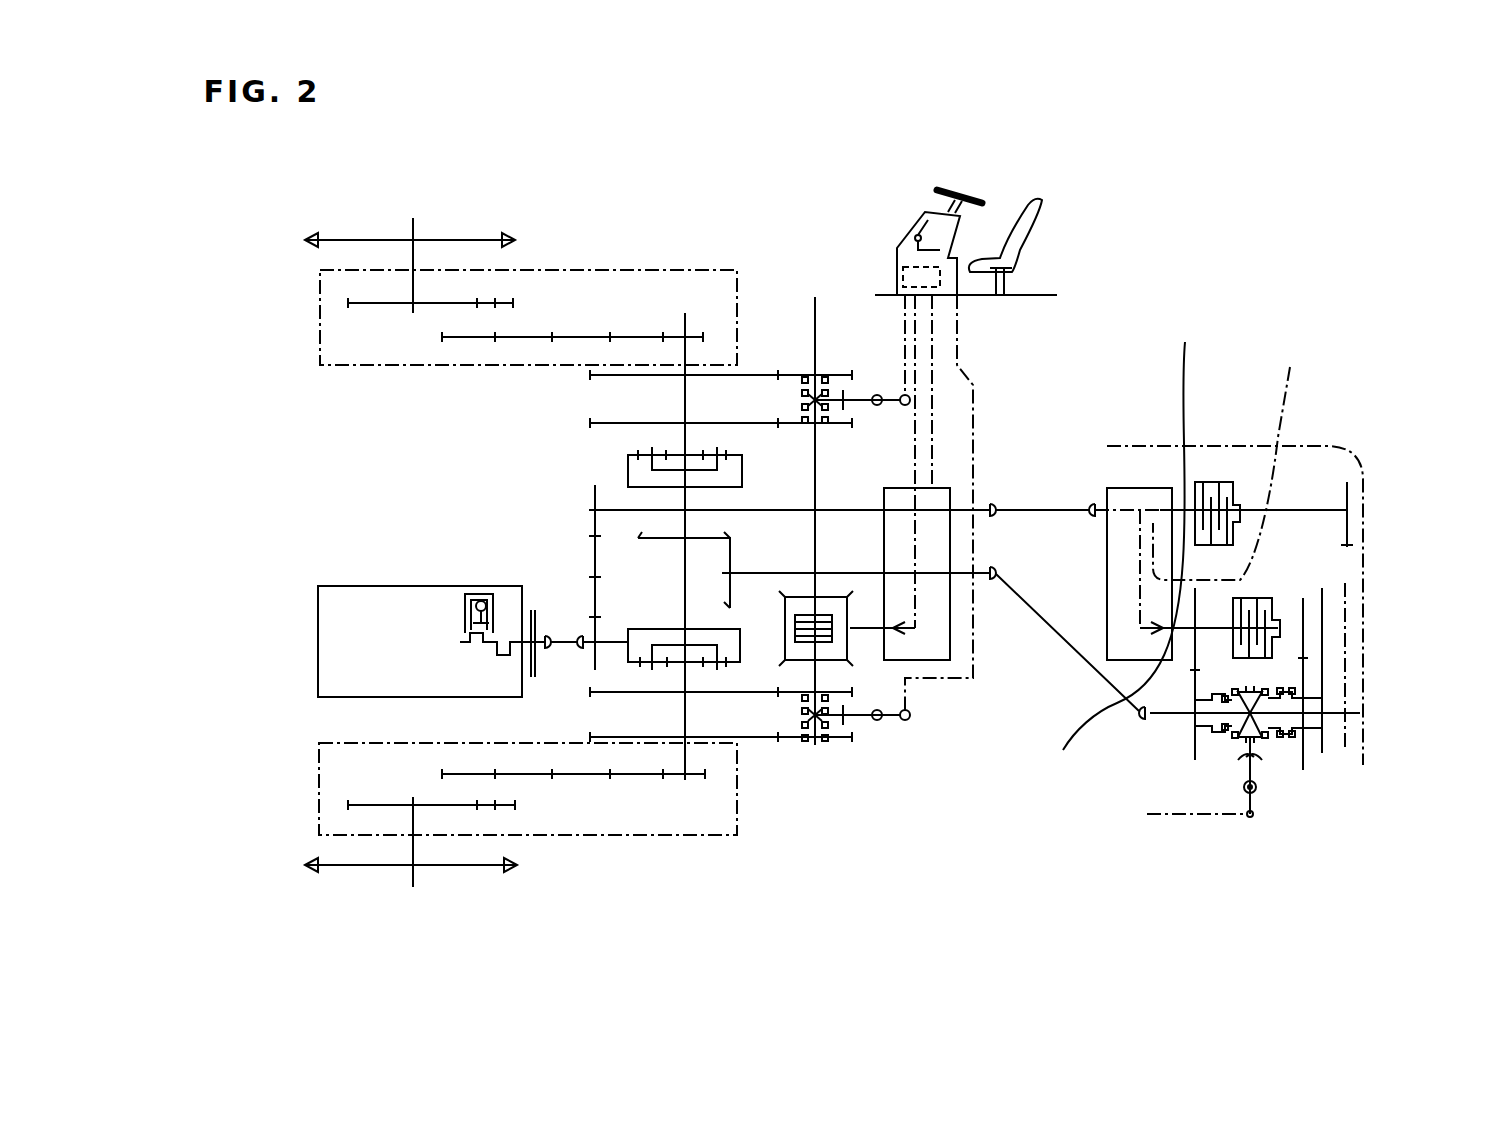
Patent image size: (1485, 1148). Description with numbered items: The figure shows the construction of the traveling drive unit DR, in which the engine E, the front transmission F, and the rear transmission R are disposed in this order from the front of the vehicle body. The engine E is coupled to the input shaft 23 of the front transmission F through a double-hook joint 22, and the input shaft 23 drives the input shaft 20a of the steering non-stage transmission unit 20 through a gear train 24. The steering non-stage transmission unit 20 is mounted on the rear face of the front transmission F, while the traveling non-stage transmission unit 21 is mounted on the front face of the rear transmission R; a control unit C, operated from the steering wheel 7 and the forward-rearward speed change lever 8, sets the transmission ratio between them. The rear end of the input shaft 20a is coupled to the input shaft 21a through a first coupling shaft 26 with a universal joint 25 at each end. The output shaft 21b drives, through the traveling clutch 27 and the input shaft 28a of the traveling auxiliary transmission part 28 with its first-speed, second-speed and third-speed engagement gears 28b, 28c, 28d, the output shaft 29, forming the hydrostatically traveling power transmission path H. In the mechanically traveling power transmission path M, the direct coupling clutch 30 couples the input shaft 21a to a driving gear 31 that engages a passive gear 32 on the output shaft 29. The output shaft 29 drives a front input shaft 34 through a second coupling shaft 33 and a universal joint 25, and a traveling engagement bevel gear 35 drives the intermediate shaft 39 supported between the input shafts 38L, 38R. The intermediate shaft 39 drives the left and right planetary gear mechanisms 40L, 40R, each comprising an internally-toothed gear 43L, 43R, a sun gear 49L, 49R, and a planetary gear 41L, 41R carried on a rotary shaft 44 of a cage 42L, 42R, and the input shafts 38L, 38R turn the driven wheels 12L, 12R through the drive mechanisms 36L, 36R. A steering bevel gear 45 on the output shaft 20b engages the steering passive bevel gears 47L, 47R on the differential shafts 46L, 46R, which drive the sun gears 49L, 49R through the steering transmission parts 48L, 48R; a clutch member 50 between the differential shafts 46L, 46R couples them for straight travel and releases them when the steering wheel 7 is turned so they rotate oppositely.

The steering wheel 7 is at (975, 188).
The forward-rearward speed change lever 8 is at (923, 216).
The right driven wheel 12R is at (452, 238).
The left driven wheel 12L is at (353, 867).
The steering non-stage transmission unit 20 is at (938, 488).
The input shaft of the steering non-stage transmission unit 20a is at (870, 508).
The output shaft of the steering non-stage transmission unit 20b is at (870, 632).
The traveling non-stage transmission unit 21 is at (1135, 529).
The input shaft of the traveling non-stage transmission unit 21a is at (1098, 505).
The output shaft of the traveling non-stage transmission unit 21b is at (1068, 744).
The double-hook joint 22 is at (567, 640).
The input shaft of the front transmission 23 is at (622, 508).
The gear train 24 is at (588, 545).
The universal joint 25 is at (1092, 514).
The first coupling shaft 26 is at (1045, 508).
The traveling clutch 27 is at (1258, 598).
The traveling auxiliary transmission part 28 is at (1281, 795).
The input shaft of the traveling auxiliary transmission part 28a is at (1290, 628).
The first-speed engagement gear 28b is at (1344, 708).
The second-speed engagement gear 28c is at (1195, 668).
The third-speed engagement gear 28d is at (1353, 712).
The output shaft of the traveling auxiliary transmission part 29 is at (1215, 697).
The direct coupling clutch 30 is at (1233, 482).
The driving gear 31 is at (1353, 500).
The passive gear 32 is at (1345, 723).
The second coupling shaft 33 is at (1068, 643).
The front input shaft 34 is at (990, 577).
The traveling engagement bevel gear 35 is at (738, 542).
The right drive mechanism 36R is at (565, 214).
The left drive mechanism 36L is at (566, 855).
The input shaft of the right traveling part 38R is at (685, 313).
The input shaft of the left traveling part 38L is at (686, 780).
The intermediate shaft 39 is at (685, 580).
The right planetary gear mechanism 40R is at (749, 499).
The left planetary gear mechanism 40L is at (752, 657).
The right planetary gear 41R is at (727, 455).
The left planetary gear 41L is at (723, 663).
The right cage 42R is at (713, 455).
The left cage 42L is at (740, 663).
The right internally-toothed gear 43R is at (742, 458).
The left internally-toothed gear 43L is at (628, 662).
The rotary shaft 44 is at (647, 453).
The steering bevel gear 45 is at (848, 607).
The right differential shaft 46R is at (815, 505).
The left differential shaft 46L is at (822, 748).
The right steering passive bevel gear 47R is at (800, 598).
The left steering passive bevel gear 47L is at (800, 662).
The right steering transmission part 48R is at (870, 382).
The left steering transmission part 48L is at (862, 742).
The right sun gear 49R is at (652, 453).
The left sun gear 49L is at (667, 665).
The clutch member 50 is at (793, 618).
The engine E is at (368, 586).
The front transmission F is at (536, 480).
The rear transmission R is at (1072, 398).
The control unit C is at (940, 290).
The hydrostatically traveling power transmission path H is at (1229, 457).
The mechanically traveling power transmission path M is at (1333, 442).
The traveling drive unit DR is at (1262, 210).